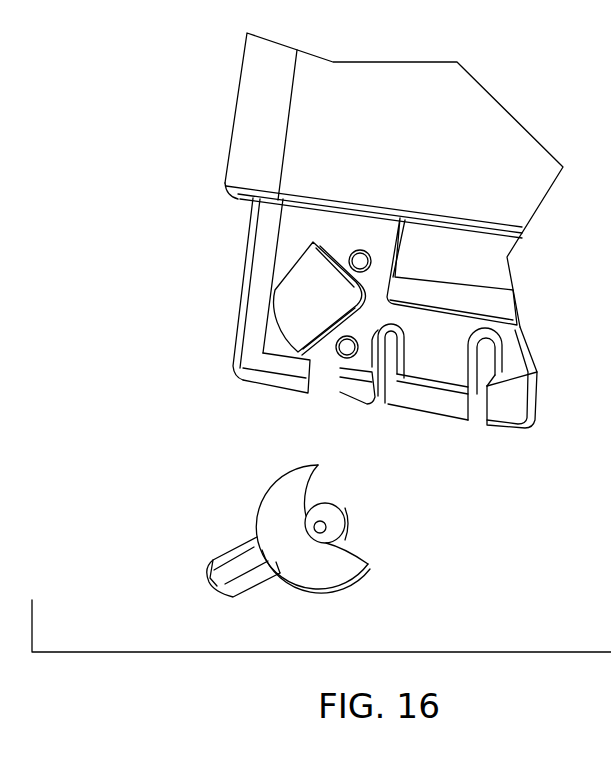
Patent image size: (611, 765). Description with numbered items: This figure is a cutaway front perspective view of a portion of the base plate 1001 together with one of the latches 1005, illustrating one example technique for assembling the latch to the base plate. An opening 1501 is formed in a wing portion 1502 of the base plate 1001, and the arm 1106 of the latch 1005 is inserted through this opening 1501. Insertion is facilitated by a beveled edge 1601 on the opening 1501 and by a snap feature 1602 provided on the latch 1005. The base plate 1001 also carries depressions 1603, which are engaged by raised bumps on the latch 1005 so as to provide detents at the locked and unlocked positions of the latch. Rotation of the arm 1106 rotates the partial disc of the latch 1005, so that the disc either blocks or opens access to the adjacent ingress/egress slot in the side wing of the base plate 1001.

The base plate 1001 is at (252, 142).
The wing portion 1502 is at (290, 237).
The opening 1501 is at (292, 287).
The beveled edge 1601 is at (360, 300).
The depressions 1603 is at (365, 251).
The latch 1005 is at (278, 492).
The snap feature 1602 is at (345, 523).
The arm 1106 is at (215, 585).